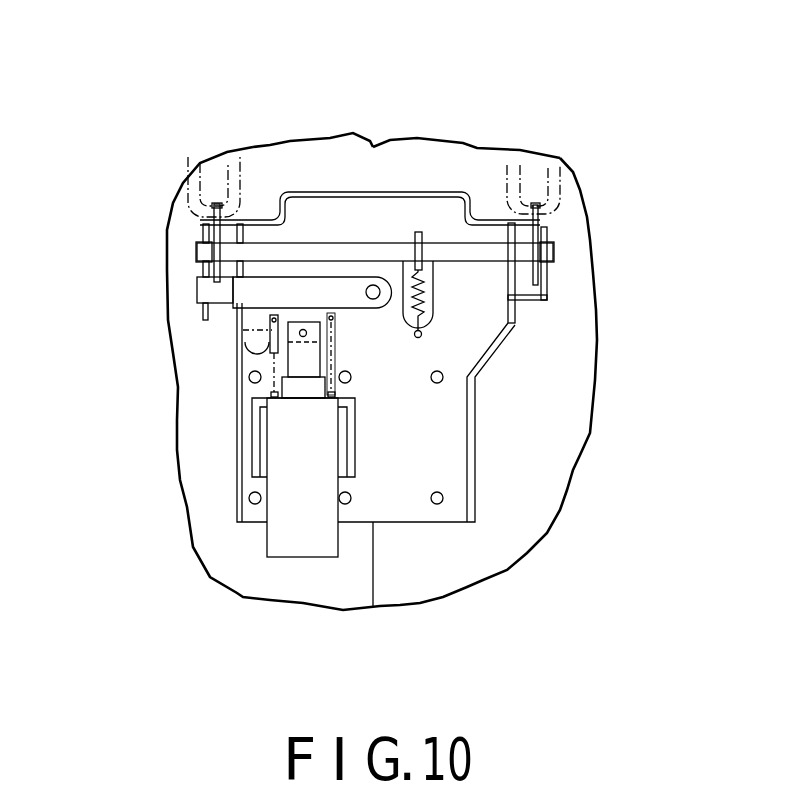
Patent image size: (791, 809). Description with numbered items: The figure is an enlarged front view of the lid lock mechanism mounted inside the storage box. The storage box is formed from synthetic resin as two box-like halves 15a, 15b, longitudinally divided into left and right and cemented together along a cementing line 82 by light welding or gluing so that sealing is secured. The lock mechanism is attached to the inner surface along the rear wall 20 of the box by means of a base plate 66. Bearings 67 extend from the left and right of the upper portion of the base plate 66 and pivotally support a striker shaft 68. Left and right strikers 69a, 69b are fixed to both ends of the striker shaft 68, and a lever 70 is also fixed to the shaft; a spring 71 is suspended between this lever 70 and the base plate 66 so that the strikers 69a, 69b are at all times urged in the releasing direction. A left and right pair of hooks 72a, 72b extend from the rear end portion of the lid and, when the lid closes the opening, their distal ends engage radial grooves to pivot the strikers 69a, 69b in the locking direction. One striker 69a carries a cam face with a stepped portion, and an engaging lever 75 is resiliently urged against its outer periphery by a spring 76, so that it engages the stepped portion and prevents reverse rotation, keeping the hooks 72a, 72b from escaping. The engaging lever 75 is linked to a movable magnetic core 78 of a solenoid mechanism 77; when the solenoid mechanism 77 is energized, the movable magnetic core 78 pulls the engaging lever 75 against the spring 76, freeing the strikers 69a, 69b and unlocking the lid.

The box-like half 15a is at (419, 148).
The box-like half 15b is at (330, 137).
The rear wall 20 is at (565, 390).
The base plate 66 is at (447, 440).
The bearings 67 is at (203, 317).
The striker shaft 68 is at (477, 257).
The striker 69a is at (204, 229).
The striker 69b is at (548, 232).
The lever 70 is at (420, 232).
The spring 71 is at (443, 257).
The hook 72a is at (190, 195).
The hook 72b is at (558, 182).
The engaging lever 75 is at (287, 287).
The spring 76 is at (337, 340).
The solenoid mechanism 77 is at (297, 537).
The movable magnetic core 78 is at (302, 363).
The cementing line 82 is at (383, 191).